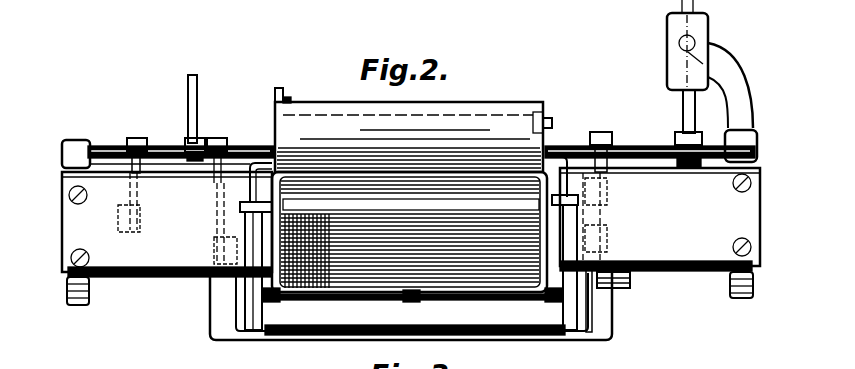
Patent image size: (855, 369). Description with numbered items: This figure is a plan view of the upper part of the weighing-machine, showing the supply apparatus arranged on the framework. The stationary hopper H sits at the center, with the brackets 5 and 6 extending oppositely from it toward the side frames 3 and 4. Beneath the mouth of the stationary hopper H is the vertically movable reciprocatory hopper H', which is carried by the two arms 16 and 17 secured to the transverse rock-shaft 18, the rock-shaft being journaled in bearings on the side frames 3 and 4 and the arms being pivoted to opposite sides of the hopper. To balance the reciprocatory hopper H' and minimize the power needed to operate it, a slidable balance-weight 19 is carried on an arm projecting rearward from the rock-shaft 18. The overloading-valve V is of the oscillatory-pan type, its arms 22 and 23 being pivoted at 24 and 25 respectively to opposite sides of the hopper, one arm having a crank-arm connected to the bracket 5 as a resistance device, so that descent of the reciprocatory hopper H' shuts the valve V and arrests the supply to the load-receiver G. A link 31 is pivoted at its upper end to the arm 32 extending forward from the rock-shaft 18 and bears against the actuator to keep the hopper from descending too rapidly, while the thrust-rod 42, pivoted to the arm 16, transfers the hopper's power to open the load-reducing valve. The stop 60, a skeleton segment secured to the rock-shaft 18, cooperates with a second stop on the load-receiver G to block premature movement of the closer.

The side frame 3 is at (754, 287).
The side frame 4 is at (66, 293).
The bracket 5 is at (660, 219).
The bracket 6 is at (167, 224).
The arm 16 is at (600, 140).
The arm 17 is at (243, 146).
The transverse rock-shaft 18 is at (648, 146).
The slidable balance-weight 19 is at (705, 33).
The valve arm 22 is at (583, 297).
The valve arm 23 is at (236, 283).
The pivot 24 is at (591, 236).
The pivot 25 is at (231, 248).
The link 31 is at (125, 233).
The arm 32 is at (132, 172).
The thrust-rod 42 is at (614, 286).
The stop 60 is at (189, 103).
The load-receiver G is at (211, 338).
The stationary hopper H is at (412, 190).
The reciprocatory hopper H' is at (412, 307).
The overloading-valve V is at (236, 308).